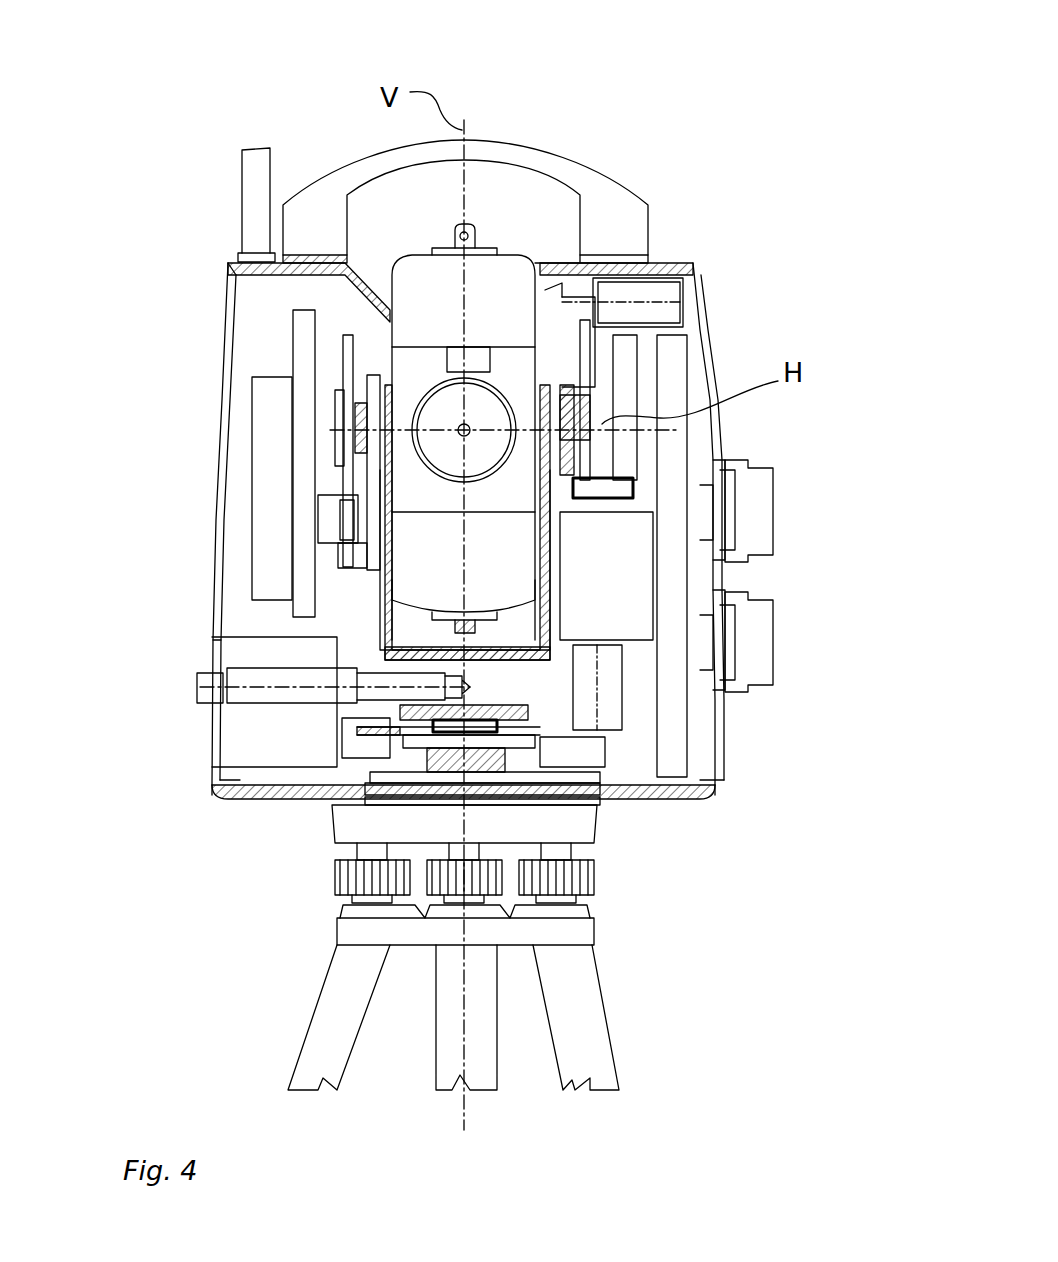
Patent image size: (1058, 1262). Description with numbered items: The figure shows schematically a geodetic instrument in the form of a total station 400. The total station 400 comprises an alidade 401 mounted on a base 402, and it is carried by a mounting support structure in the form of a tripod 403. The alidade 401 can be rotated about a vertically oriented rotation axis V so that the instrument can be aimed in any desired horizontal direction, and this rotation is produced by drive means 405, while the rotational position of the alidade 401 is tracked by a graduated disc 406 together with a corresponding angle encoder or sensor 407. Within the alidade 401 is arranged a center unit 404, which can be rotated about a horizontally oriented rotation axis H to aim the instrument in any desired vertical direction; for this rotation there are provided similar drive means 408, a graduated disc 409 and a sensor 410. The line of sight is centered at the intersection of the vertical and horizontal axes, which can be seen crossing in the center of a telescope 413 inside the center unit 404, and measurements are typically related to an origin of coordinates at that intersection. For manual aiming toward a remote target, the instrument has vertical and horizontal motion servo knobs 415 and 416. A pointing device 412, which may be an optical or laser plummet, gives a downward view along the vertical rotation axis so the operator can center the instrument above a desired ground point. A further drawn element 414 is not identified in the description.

The total station 400 is at (688, 136).
The alidade 401 is at (715, 810).
The base 402 is at (575, 826).
The tripod 403 is at (580, 997).
The center unit 404 is at (505, 295).
The drive means 405 is at (612, 717).
The graduated disc 406 is at (398, 732).
The angle encoder or sensor 407 is at (353, 748).
The drive means 408 is at (670, 297).
The graduated disc 409 is at (347, 487).
The sensor 410 is at (330, 535).
The pointing device 412 is at (210, 683).
The telescope 413 is at (437, 415).
The trunnion support 414 is at (457, 415).
The vertical motion servo knob 415 is at (755, 493).
The horizontal motion servo knob 416 is at (760, 635).